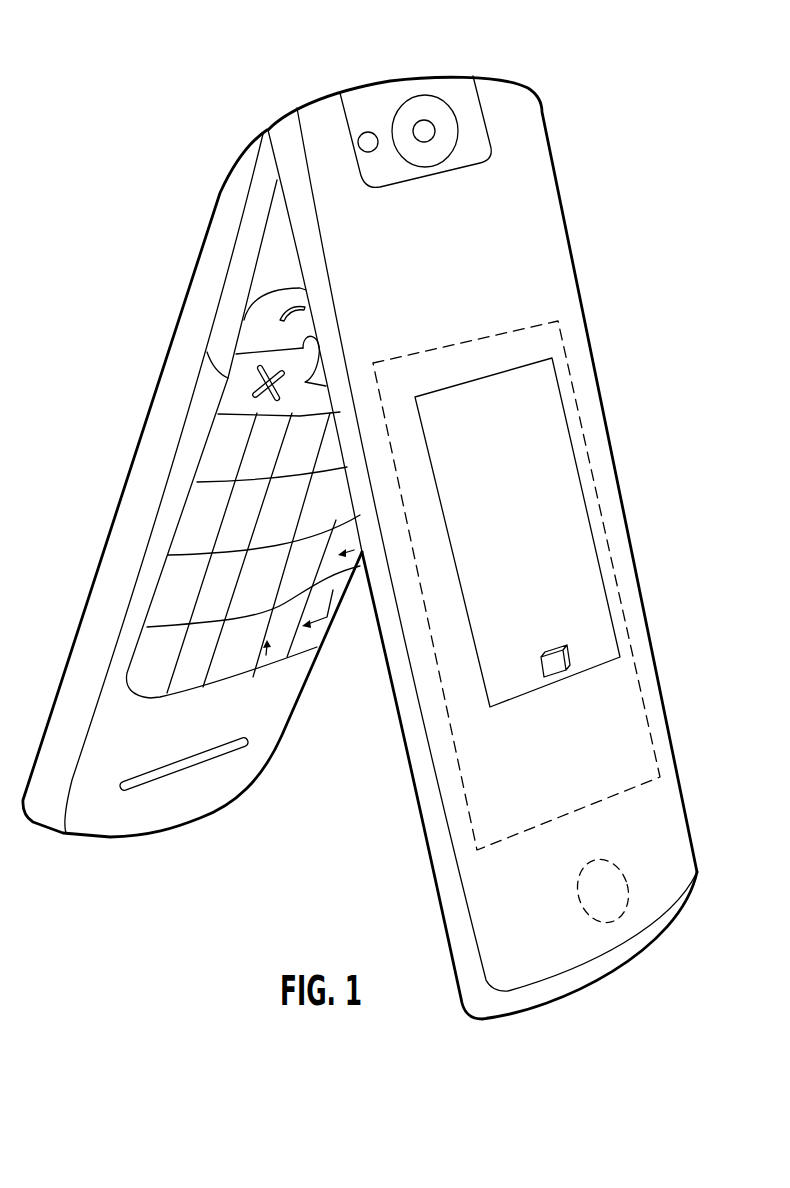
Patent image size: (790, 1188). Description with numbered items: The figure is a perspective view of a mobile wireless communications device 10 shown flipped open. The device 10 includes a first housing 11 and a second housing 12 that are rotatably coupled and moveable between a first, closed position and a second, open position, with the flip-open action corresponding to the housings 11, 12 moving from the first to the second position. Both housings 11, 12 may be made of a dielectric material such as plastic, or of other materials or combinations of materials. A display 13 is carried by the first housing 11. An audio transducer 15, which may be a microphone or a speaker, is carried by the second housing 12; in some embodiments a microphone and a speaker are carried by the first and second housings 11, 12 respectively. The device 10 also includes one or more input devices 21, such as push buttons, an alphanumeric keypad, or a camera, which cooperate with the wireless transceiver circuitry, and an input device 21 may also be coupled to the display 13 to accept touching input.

The mobile wireless communications device 10 is at (225, 78).
The first housing 11 is at (563, 220).
The second housing 12 is at (142, 413).
The display 13 is at (593, 460).
The audio transducer 15 is at (123, 794).
The input device 21 is at (457, 97).